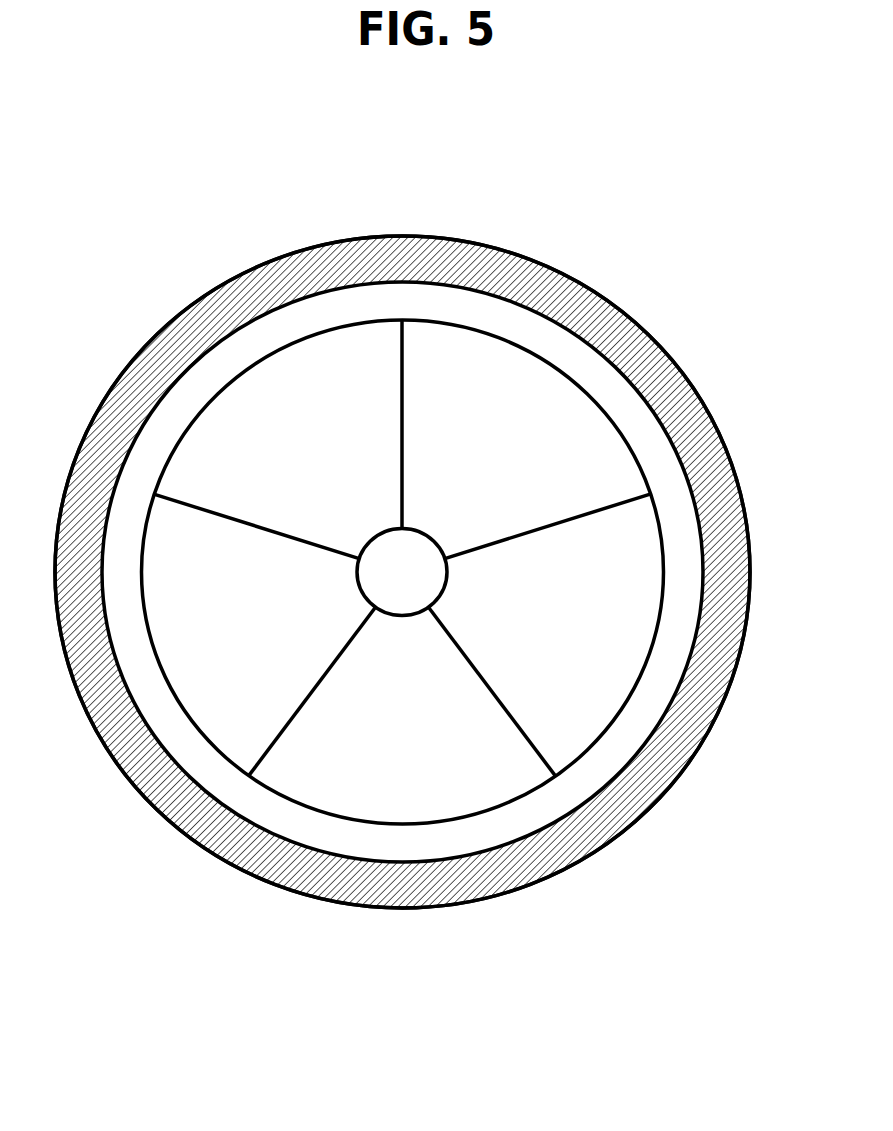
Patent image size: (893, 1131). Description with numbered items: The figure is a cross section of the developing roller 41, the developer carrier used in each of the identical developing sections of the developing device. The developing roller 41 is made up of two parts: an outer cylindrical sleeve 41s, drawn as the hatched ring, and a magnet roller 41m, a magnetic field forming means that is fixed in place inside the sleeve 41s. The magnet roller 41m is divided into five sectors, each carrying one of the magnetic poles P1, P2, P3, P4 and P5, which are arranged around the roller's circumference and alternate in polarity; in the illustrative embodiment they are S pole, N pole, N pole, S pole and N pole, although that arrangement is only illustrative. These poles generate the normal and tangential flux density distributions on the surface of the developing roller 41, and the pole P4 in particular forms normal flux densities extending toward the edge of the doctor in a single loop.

The developing roller 41 is at (192, 272).
The cylindrical sleeve 41s is at (572, 296).
The magnet roller 41m is at (602, 462).
The magnetic pole P1 is at (547, 574).
The magnetic pole P2 is at (470, 709).
The magnetic pole P3 is at (270, 691).
The magnetic pole P4 is at (256, 474).
The magnetic pole P5 is at (468, 424).